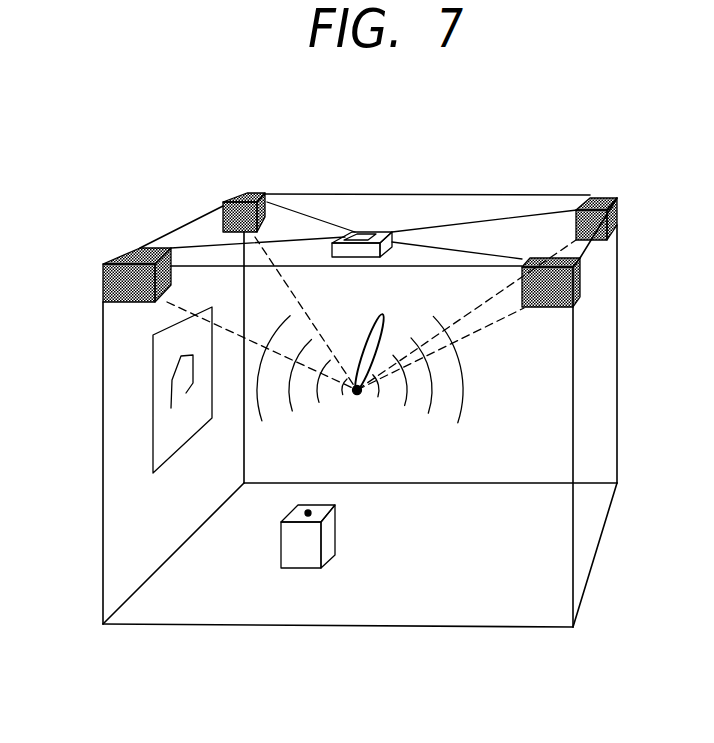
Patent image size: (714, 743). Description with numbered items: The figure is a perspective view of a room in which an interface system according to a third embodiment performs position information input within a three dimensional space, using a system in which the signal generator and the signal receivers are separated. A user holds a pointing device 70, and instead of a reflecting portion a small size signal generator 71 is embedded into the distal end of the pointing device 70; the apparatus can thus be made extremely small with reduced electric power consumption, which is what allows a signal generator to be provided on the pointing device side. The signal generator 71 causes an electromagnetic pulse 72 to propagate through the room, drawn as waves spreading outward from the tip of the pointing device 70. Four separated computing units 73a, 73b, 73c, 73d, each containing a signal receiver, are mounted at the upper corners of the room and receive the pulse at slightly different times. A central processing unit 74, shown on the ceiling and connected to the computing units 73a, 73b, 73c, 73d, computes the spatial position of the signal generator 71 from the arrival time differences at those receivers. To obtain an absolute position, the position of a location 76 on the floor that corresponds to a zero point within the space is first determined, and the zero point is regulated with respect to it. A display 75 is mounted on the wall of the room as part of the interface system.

The pointing device 70 is at (384, 320).
The signal generator 71 is at (361, 394).
The electromagnetic pulse 72 is at (463, 403).
The computing unit 73a is at (134, 257).
The computing unit 73b is at (257, 199).
The computing unit 73c is at (602, 201).
The computing unit 73d is at (555, 288).
The central processing unit 74 is at (363, 235).
The display 75 is at (163, 433).
The location 76 is at (308, 513).